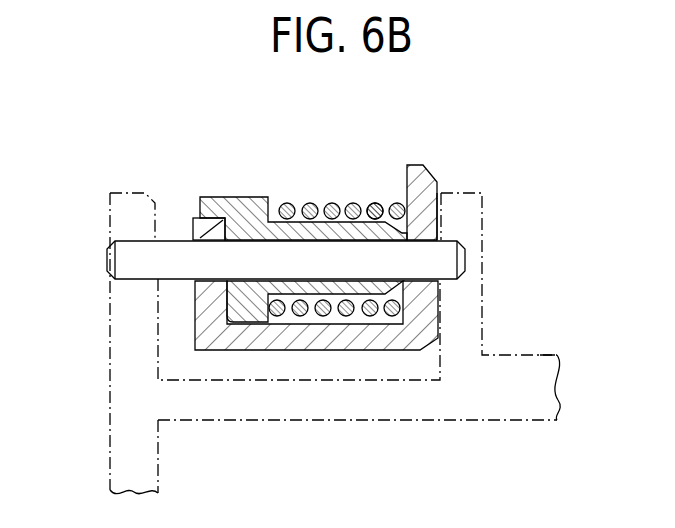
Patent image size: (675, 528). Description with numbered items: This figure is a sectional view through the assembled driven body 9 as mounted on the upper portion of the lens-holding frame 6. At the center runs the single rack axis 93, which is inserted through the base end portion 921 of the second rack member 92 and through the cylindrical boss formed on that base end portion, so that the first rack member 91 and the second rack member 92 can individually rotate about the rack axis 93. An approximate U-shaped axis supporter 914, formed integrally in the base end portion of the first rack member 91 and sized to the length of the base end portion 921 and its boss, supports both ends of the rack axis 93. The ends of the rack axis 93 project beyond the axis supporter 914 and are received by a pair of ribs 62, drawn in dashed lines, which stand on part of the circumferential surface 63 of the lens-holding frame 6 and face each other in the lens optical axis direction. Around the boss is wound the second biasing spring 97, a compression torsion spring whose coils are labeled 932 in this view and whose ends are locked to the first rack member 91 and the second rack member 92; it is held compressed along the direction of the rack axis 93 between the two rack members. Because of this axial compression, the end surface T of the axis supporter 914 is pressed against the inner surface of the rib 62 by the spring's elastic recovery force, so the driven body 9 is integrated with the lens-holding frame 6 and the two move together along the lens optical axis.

The driven body 9 is at (166, 165).
The first rack member 91 is at (288, 340).
The axis supporter 914 is at (427, 183).
The second rack member 92 is at (268, 197).
The base end portion 921 is at (232, 200).
The coil spring 932 is at (323, 208).
The second biasing spring 97 is at (373, 204).
The rack axis 93 is at (466, 256).
The ribs 62 is at (478, 312).
The circumferential surface 63 is at (405, 404).
The lens-holding frame 6 is at (533, 403).
The end surface T is at (438, 210).